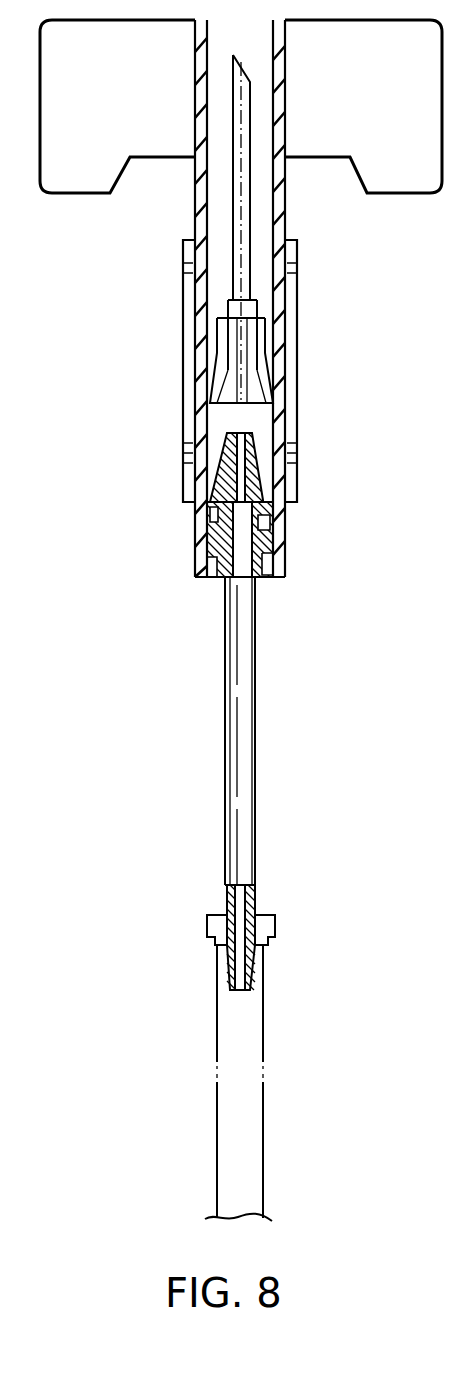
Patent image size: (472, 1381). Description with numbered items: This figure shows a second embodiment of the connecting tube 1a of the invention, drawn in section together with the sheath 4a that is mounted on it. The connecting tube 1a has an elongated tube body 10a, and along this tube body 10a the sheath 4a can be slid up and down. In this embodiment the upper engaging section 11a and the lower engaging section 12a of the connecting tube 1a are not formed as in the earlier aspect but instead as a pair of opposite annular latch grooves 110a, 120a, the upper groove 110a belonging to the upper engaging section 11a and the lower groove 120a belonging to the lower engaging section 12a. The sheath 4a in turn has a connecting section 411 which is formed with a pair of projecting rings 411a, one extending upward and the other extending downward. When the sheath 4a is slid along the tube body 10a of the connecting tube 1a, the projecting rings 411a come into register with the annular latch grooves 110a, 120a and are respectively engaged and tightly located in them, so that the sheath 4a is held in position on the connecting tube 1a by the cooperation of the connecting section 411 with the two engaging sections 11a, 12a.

The connecting tube 1a is at (232, 638).
The sheath 4a is at (190, 305).
The tube body 10a is at (247, 748).
The upper engaging section 11a is at (262, 492).
The annular latch groove 110a is at (232, 555).
The lower engaging section 12a is at (286, 1024).
The annular latch groove 120a is at (255, 913).
The connecting section 411 is at (167, 555).
The projecting rings 411a is at (220, 533).